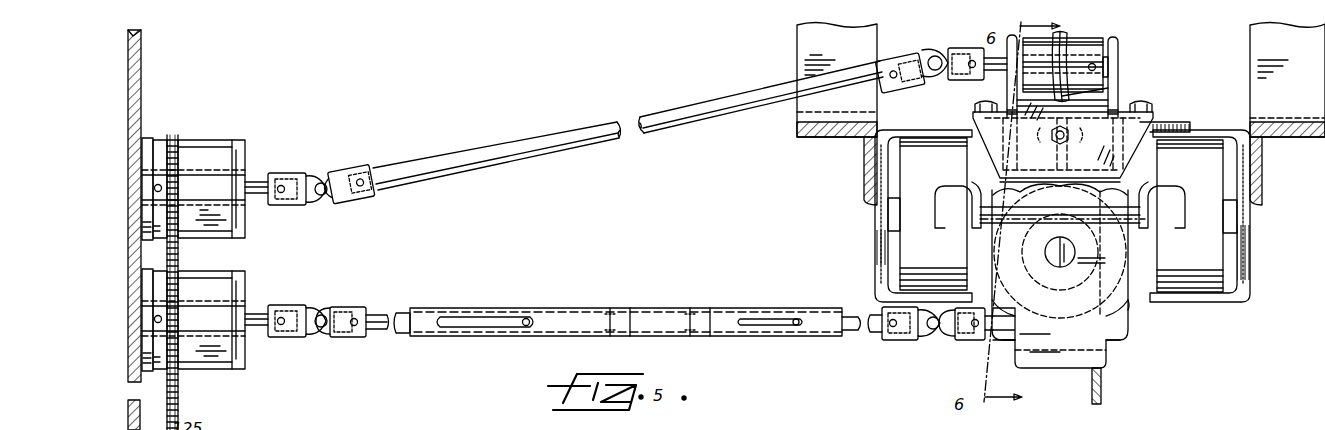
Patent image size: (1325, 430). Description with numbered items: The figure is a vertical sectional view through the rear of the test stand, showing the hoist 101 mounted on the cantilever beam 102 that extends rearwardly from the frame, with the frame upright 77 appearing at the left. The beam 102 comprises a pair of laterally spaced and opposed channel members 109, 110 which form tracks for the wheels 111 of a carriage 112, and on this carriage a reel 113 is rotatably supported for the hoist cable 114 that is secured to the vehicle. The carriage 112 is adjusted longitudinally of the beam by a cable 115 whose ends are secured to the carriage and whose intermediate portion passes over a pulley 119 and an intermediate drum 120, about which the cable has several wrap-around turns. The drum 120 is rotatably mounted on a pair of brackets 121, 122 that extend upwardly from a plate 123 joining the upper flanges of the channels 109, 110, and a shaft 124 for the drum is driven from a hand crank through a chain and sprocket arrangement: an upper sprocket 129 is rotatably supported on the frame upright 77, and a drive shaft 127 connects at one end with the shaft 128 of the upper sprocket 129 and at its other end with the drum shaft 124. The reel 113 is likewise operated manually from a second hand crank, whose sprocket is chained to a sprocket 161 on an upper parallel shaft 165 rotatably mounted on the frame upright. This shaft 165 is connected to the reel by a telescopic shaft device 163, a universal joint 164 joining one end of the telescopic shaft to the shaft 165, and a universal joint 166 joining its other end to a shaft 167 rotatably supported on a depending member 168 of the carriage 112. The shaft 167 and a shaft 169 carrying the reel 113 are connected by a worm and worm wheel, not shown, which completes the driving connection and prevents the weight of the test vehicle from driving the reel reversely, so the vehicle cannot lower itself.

The frame upright 77 is at (142, 58).
The hoist 101 is at (1139, 343).
The beam 102 is at (814, 147).
The channel member 109 is at (1253, 222).
The channel member 110 is at (878, 242).
The wheels 111 is at (940, 193).
The carriage 112 is at (1180, 88).
The reel 113 is at (1132, 312).
The hoist cable 114 is at (1102, 386).
The cable 115 is at (1114, 42).
The pulley 119 is at (1085, 108).
The drum 120 is at (1032, 66).
The bracket 121 is at (1102, 90).
The bracket 122 is at (1012, 76).
The plate 123 is at (1187, 118).
The shaft 124 is at (1116, 68).
The drive shaft 127 is at (508, 142).
The shaft 128 is at (252, 176).
The upper sprocket 129 is at (175, 137).
The sprocket 161 is at (180, 275).
The telescopic shaft device 163 is at (588, 307).
The universal joint 164 is at (320, 310).
The shaft 165 is at (272, 305).
The universal joint 166 is at (915, 341).
The shaft 167 is at (978, 341).
The depending member 168 is at (1032, 362).
The shaft 169 is at (1045, 258).